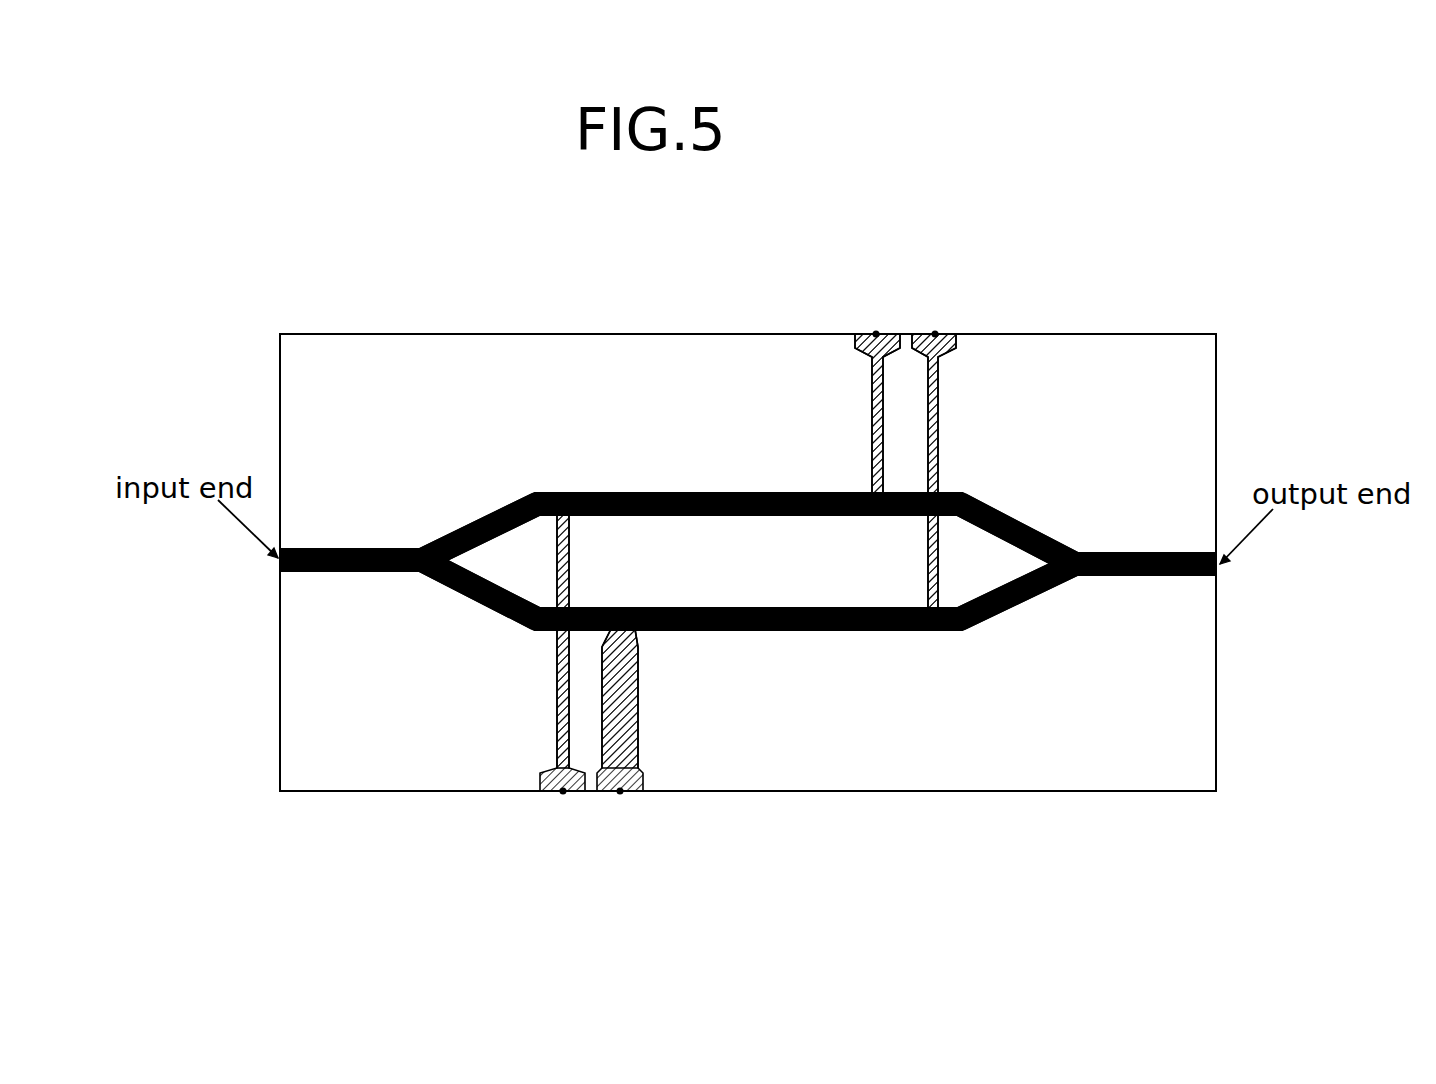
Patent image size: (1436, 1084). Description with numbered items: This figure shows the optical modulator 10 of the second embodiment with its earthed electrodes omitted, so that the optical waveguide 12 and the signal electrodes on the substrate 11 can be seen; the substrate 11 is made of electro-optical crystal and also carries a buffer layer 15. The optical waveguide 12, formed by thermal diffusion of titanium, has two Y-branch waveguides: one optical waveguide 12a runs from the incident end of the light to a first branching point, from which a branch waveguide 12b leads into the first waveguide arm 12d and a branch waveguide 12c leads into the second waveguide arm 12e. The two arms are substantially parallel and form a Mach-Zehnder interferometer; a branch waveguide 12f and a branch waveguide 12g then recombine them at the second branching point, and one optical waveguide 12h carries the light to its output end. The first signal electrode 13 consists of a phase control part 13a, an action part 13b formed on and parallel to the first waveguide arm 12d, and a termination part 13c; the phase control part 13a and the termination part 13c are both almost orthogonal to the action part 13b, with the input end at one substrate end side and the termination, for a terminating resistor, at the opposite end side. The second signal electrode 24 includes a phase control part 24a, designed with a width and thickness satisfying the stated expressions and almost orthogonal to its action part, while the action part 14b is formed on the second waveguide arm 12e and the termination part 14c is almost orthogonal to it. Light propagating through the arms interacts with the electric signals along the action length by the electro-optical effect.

The optical waveguide device / substrate 10 is at (1207, 328).
The substrate 11 is at (393, 334).
The optical waveguide 12 is at (300, 572).
The optical waveguide 12a is at (346, 572).
The branch waveguide 12b is at (462, 528).
The branch waveguide 12c is at (470, 604).
The first waveguide arm 12d is at (696, 492).
The second waveguide arm 12e is at (788, 632).
The branch waveguide 12f is at (1026, 522).
The branch waveguide 12g is at (1010, 622).
The optical waveguide 12h is at (1146, 577).
The first signal electrode 13 is at (871, 405).
The phase control part 13a is at (560, 677).
The action part 13b is at (786, 500).
The termination part 13c is at (871, 458).
The action part 14b is at (878, 632).
The termination part 14c is at (940, 478).
The buffer layer 15 is at (1100, 786).
The second signal electrode 24 is at (940, 402).
The phase control part 24a is at (640, 690).